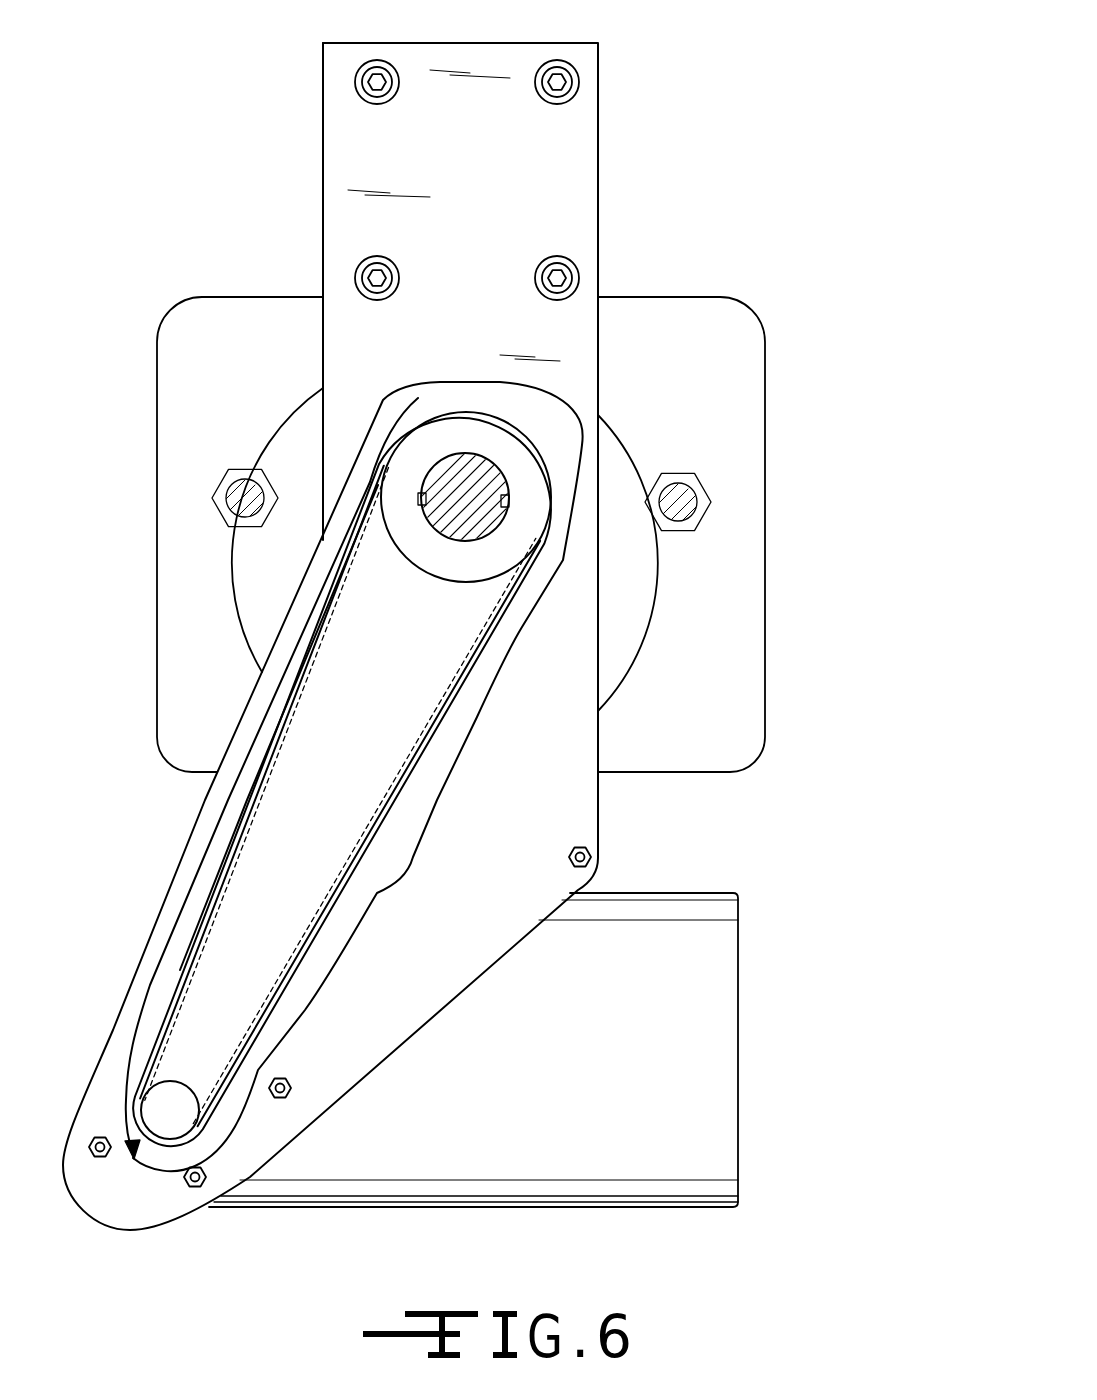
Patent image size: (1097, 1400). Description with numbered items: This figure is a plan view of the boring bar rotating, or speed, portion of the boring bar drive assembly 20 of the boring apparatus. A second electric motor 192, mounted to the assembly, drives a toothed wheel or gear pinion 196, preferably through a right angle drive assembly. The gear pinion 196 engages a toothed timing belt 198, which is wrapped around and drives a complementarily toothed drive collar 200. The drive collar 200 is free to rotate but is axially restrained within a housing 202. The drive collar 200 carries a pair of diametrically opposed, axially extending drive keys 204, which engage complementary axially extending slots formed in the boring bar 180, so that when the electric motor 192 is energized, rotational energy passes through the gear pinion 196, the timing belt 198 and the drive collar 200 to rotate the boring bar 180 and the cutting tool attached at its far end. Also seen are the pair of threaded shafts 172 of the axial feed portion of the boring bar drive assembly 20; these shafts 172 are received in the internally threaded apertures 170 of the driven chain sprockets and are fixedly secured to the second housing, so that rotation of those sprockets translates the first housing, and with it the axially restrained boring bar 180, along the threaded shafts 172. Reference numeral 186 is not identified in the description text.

The boring bar drive assembly 20 is at (862, 88).
The internally threaded apertures 170 is at (566, 1050).
The threaded shafts 172 is at (243, 488).
The boring bar 180 is at (478, 462).
The motor housing flange 186 is at (725, 600).
The second electric motor 192 is at (612, 1071).
The gear pinion 196 is at (170, 1093).
The timing belt 198 is at (262, 765).
The drive collar 200 is at (418, 556).
The housing 202 is at (574, 822).
The drive keys 204 is at (415, 493).